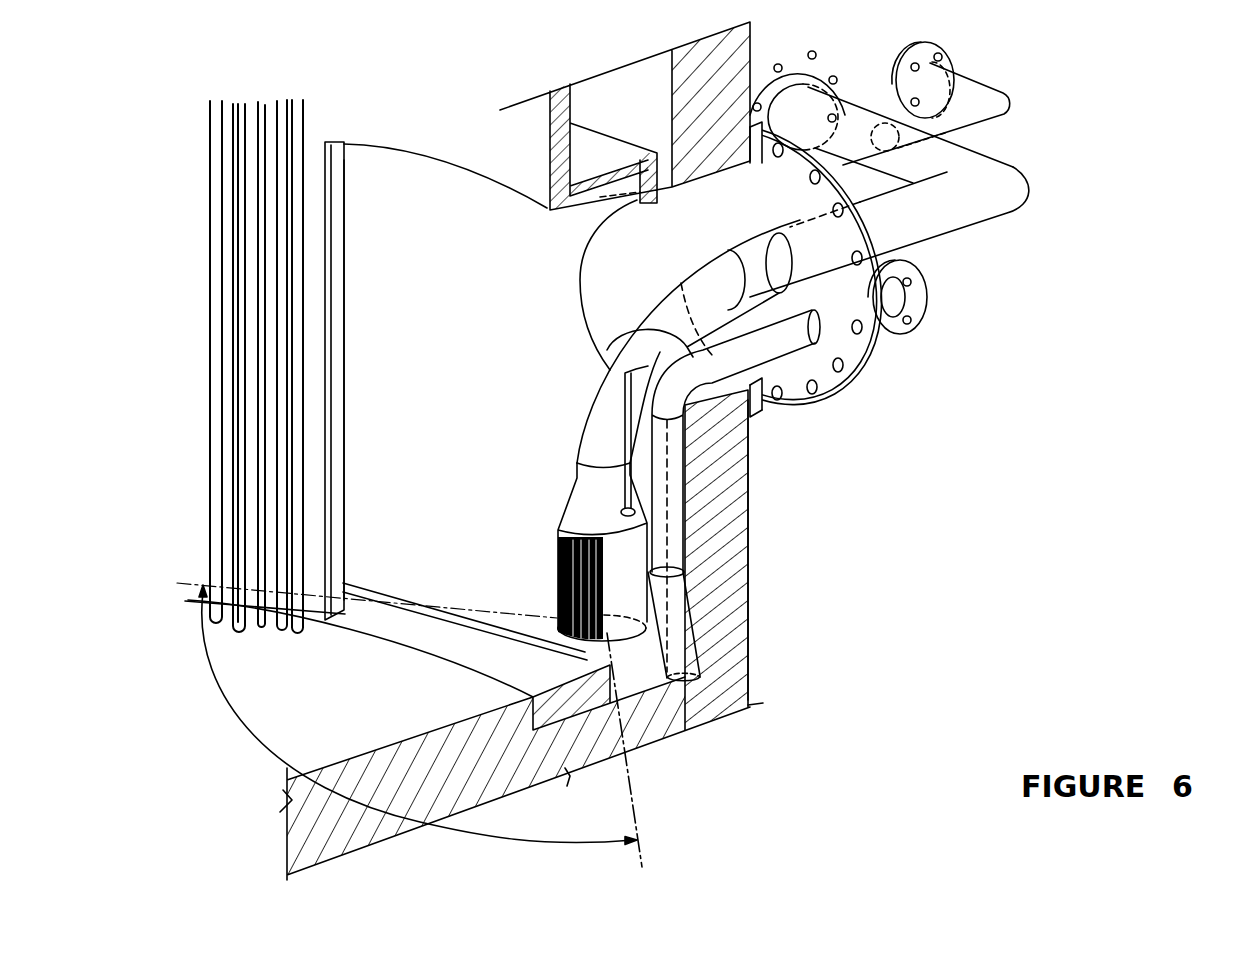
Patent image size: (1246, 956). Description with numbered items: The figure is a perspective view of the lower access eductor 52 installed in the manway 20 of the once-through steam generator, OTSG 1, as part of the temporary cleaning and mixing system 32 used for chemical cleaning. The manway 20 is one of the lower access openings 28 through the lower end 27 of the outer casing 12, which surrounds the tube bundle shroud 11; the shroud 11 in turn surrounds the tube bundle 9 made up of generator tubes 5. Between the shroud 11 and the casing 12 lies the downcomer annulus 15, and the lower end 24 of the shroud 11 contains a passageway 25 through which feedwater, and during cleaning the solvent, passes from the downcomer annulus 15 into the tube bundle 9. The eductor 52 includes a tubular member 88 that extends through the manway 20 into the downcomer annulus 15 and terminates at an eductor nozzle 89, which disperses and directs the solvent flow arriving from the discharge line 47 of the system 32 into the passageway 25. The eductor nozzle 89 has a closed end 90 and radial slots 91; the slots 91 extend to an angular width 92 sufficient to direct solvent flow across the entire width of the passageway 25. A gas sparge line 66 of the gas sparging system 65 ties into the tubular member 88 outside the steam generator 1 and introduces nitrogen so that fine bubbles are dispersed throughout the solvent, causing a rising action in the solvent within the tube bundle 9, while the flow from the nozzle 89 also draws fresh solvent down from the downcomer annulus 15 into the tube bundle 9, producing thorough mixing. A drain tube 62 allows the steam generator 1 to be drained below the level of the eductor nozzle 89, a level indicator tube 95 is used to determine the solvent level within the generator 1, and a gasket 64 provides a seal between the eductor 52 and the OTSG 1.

The OTSG 1 is at (785, 602).
The generator tubes 5 is at (213, 177).
The tube bundle 9 is at (316, 335).
The tube bundle shroud 11 is at (337, 437).
The outer casing 12 is at (745, 562).
The downcomer annulus 15 is at (632, 118).
The manway 20 is at (752, 418).
The lower end 24 is at (380, 126).
The passageway 25 is at (387, 163).
The lower end 27 is at (772, 618).
The lower access opening 28 is at (770, 373).
The cleaning and mixing system 32 is at (952, 265).
The discharge line 47 is at (914, 142).
The lower access eductor 52 is at (619, 297).
The drain tube 62 is at (677, 525).
The gasket 64 is at (883, 348).
The gas sparging system 65 is at (993, 66).
The gas sparge line 66 is at (988, 108).
The tubular member 88 is at (697, 280).
The eductor nozzle 89 is at (575, 523).
The closed end 90 is at (568, 637).
The radial slots 91 is at (600, 620).
The angular width 92 is at (263, 740).
The level indicator tube 95 is at (630, 493).